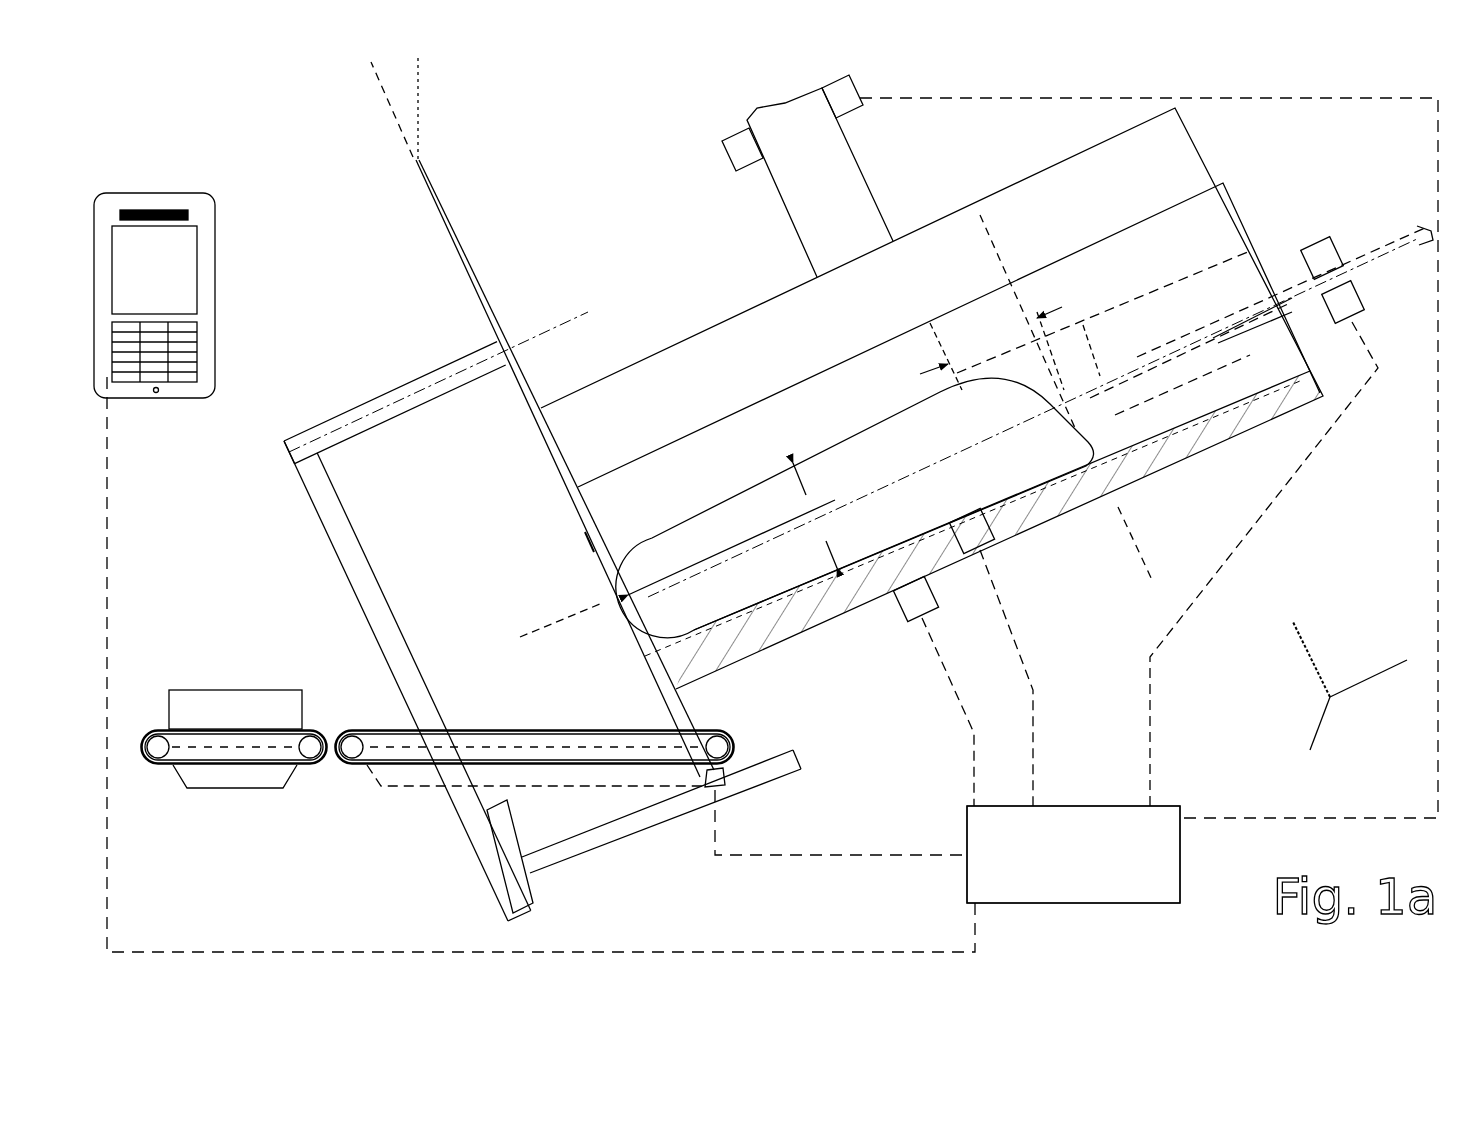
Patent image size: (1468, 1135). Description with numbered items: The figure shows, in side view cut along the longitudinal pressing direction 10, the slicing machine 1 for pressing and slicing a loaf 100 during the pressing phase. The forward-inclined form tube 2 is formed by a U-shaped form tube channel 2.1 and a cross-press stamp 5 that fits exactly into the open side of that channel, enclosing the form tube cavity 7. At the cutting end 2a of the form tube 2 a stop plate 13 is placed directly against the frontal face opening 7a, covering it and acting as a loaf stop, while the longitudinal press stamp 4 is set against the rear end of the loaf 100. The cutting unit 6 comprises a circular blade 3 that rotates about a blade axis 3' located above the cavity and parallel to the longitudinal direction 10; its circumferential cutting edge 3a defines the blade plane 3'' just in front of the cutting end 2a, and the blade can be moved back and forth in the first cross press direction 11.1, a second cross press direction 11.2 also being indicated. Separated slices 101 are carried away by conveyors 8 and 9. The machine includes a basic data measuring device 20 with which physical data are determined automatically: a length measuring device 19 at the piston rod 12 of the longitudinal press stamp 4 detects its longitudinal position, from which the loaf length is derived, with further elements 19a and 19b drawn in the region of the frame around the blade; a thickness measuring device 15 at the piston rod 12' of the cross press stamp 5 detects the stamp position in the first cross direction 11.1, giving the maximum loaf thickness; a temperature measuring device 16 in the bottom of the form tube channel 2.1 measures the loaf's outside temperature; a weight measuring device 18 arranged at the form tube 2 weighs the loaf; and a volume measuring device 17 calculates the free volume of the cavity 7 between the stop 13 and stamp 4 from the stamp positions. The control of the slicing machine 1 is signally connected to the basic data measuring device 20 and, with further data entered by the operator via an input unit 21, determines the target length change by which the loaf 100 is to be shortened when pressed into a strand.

The slicing machine 1 is at (552, 224).
The form tube 2 is at (1224, 140).
The cutting end 2a is at (538, 351).
The form tube channel 2.1 is at (1035, 515).
The blade 3 is at (565, 468).
The cutting edge 3a is at (414, 162).
The blade axis 3' is at (438, 382).
The blade plane 3'' is at (361, 109).
The longitudinal press stamp 4 is at (1123, 343).
The cross-press stamp 5 is at (932, 398).
The cutting unit 6 is at (332, 292).
The form tube cavity 7 is at (1060, 397).
The frontal face opening 7a is at (678, 688).
The conveyor 8 is at (745, 738).
The conveyor 9 is at (162, 728).
The longitudinal pressing direction 10 is at (1267, 317).
The first cross press direction 11.1 is at (1316, 667).
The second cross press direction 11.2 is at (1317, 764).
The piston rod 12 is at (1285, 262).
The piston rod 12' is at (807, 182).
The stop plate 13 is at (660, 643).
The thickness measuring device 15 is at (582, 907).
The temperature measuring device 16 is at (1163, 543).
The volume measuring device 17 is at (1073, 854).
The weight measuring device 18 is at (926, 604).
The length measuring device 19 is at (1322, 262).
The frame 19a is at (330, 510).
The frame beam 19b is at (777, 771).
The basic data measuring device 20 is at (1073, 854).
The input unit 21 is at (230, 371).
The loaf 100 is at (964, 528).
The slice 101 is at (235, 709).